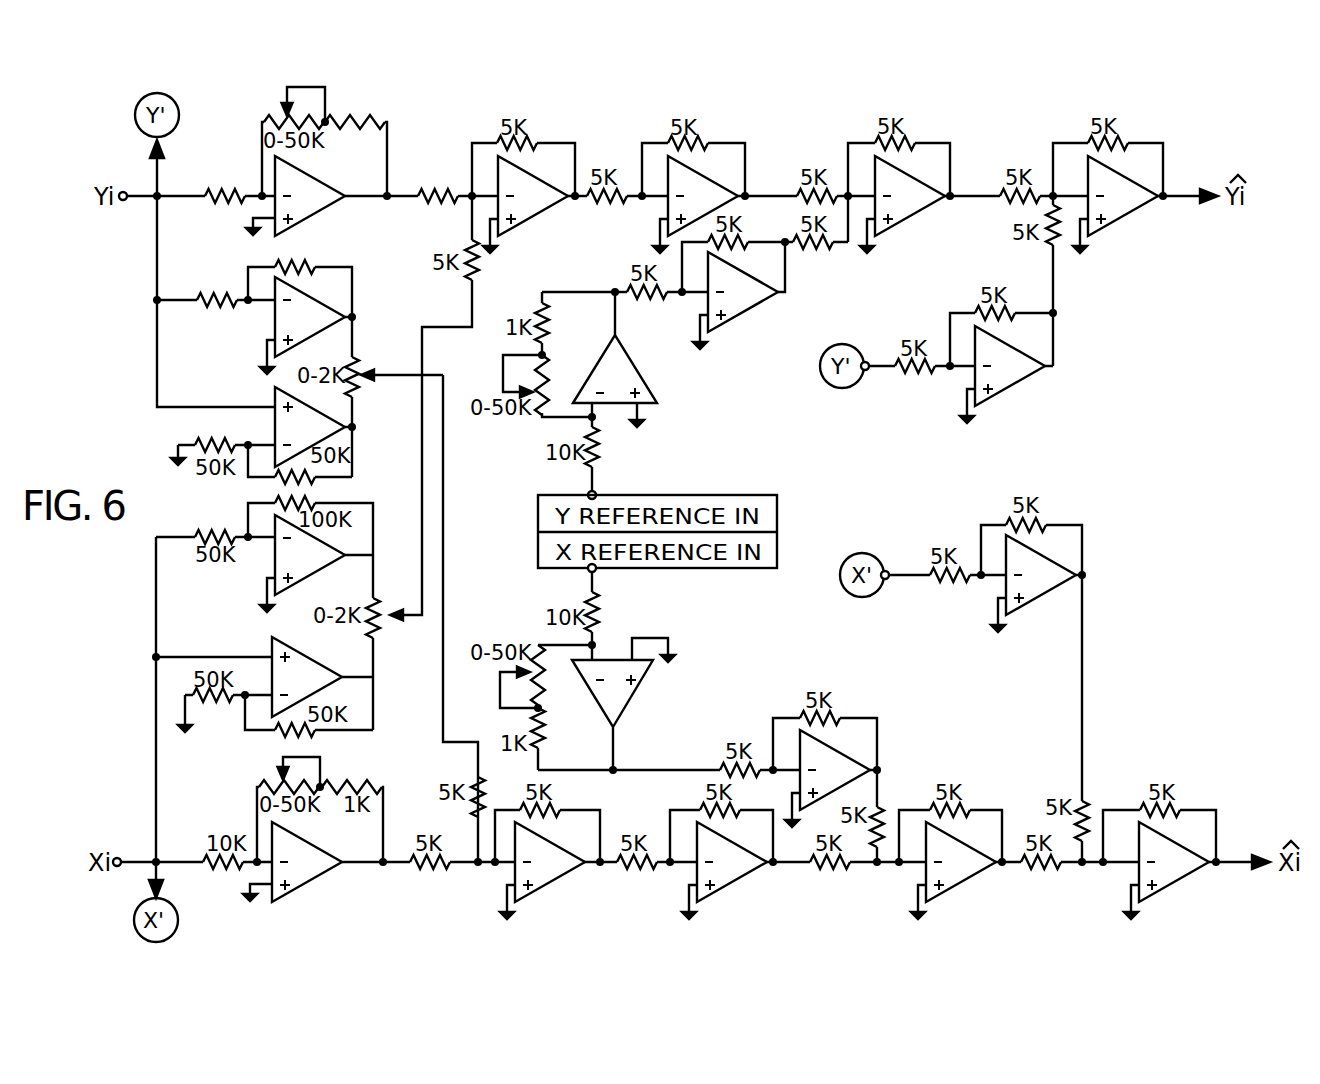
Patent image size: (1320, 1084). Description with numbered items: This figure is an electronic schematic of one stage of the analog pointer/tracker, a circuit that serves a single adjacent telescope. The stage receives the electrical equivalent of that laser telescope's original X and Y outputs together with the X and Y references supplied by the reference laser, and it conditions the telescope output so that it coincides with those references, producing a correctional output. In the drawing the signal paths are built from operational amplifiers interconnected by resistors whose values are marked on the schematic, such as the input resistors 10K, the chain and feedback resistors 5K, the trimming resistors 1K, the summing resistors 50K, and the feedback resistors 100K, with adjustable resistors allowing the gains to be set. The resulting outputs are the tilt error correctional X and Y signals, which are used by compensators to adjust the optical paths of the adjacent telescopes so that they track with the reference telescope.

The 10K input resistor 10K is at (227, 184).
The 5K resistor 5K is at (438, 184).
The 1K resistor 1K is at (355, 134).
The 50K resistor 50K is at (216, 313).
The 100K feedback resistor 100K is at (304, 255).